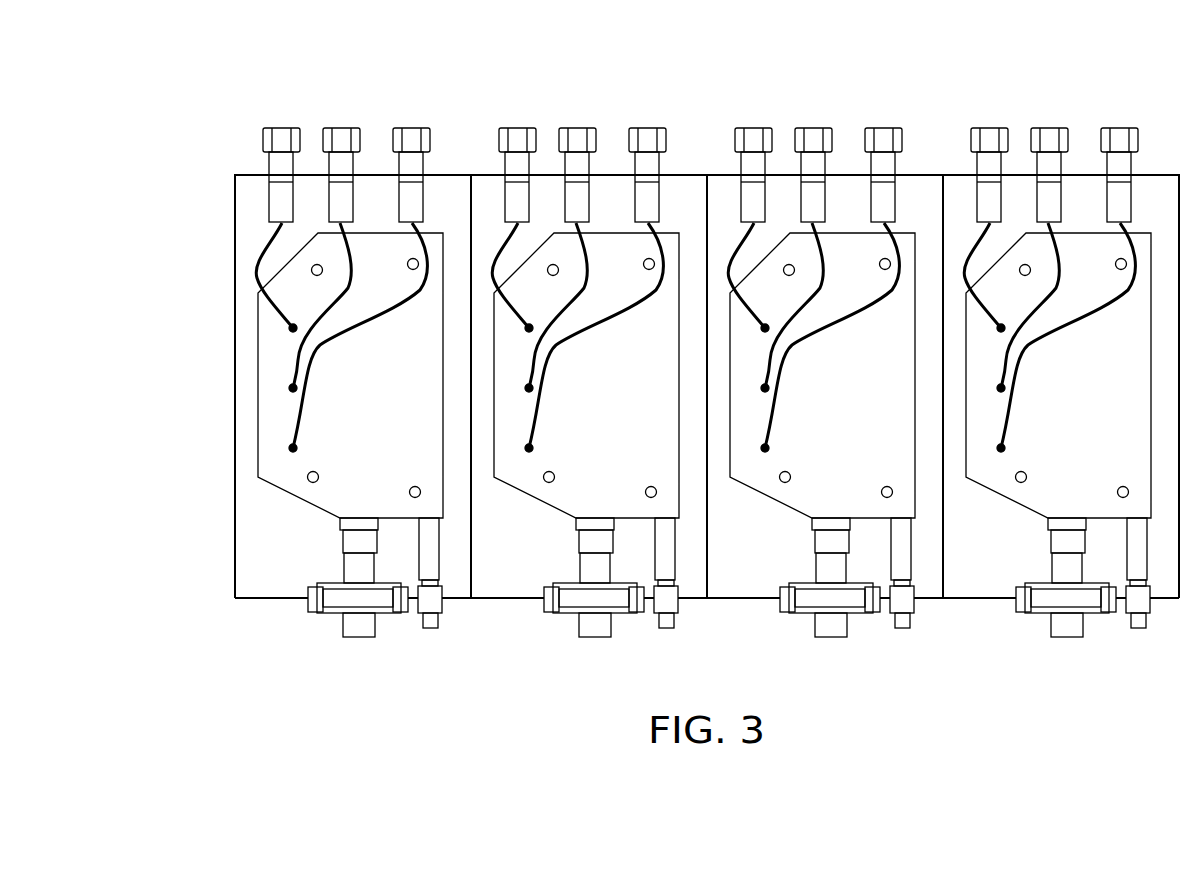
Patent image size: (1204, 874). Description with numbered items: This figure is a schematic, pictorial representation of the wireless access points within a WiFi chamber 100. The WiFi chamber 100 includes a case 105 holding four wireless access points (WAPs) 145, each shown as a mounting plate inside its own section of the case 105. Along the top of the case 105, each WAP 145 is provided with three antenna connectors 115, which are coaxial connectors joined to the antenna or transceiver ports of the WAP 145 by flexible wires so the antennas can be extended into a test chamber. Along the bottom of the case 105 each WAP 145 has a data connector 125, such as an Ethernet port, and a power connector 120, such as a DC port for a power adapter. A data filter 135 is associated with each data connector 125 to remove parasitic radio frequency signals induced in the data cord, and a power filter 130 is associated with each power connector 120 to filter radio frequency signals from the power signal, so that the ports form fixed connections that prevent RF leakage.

The WiFi chamber 100 is at (192, 103).
The case 105 is at (970, 606).
The antenna connectors 115 is at (282, 128).
The power connectors 120 is at (667, 632).
The data connectors 125 is at (310, 612).
The power filters 130 is at (678, 608).
The data filters 135 is at (358, 638).
The wireless access points (WAPs) 145 is at (373, 435).